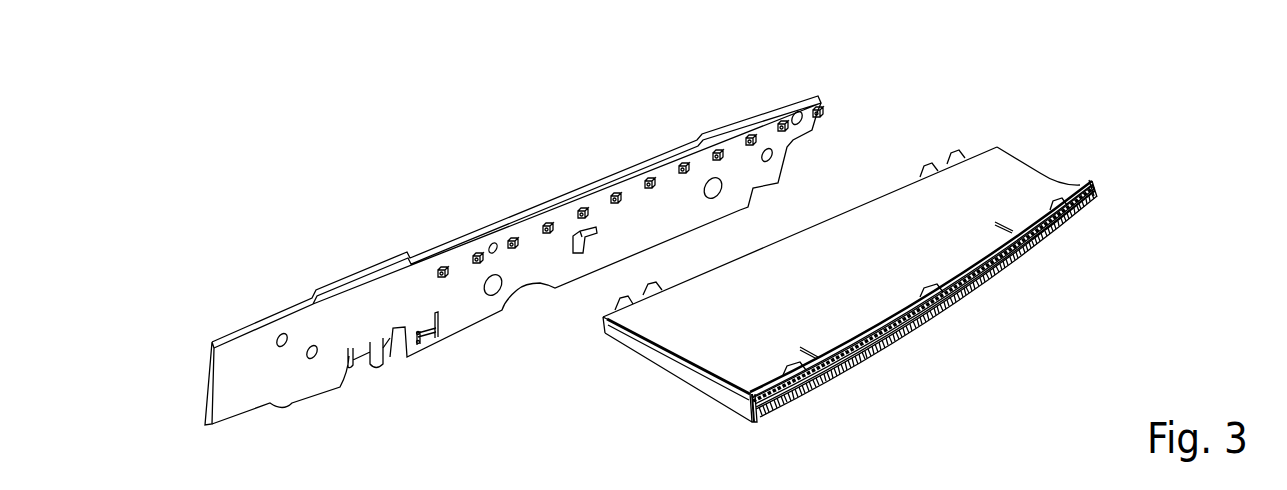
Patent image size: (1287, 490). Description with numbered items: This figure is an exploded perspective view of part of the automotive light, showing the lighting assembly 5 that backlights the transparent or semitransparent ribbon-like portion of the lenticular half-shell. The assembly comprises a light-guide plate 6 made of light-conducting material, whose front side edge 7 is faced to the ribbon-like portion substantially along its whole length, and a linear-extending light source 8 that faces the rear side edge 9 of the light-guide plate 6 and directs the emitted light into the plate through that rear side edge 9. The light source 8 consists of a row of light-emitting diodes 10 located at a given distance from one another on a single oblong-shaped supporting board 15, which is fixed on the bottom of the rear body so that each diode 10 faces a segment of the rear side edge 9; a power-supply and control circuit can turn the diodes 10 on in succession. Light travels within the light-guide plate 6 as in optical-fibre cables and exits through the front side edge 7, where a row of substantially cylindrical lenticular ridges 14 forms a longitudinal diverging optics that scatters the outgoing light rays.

The lighting assembly 5 is at (1094, 123).
The light-guide plate 6 is at (831, 280).
The front side edge 7 is at (946, 298).
The linear-extending light source 8 is at (573, 268).
The rear side edge 9 is at (755, 243).
The light-emitting diodes 10 is at (511, 238).
The lenticular ridges 14 is at (1080, 240).
The supporting board 15 is at (462, 300).